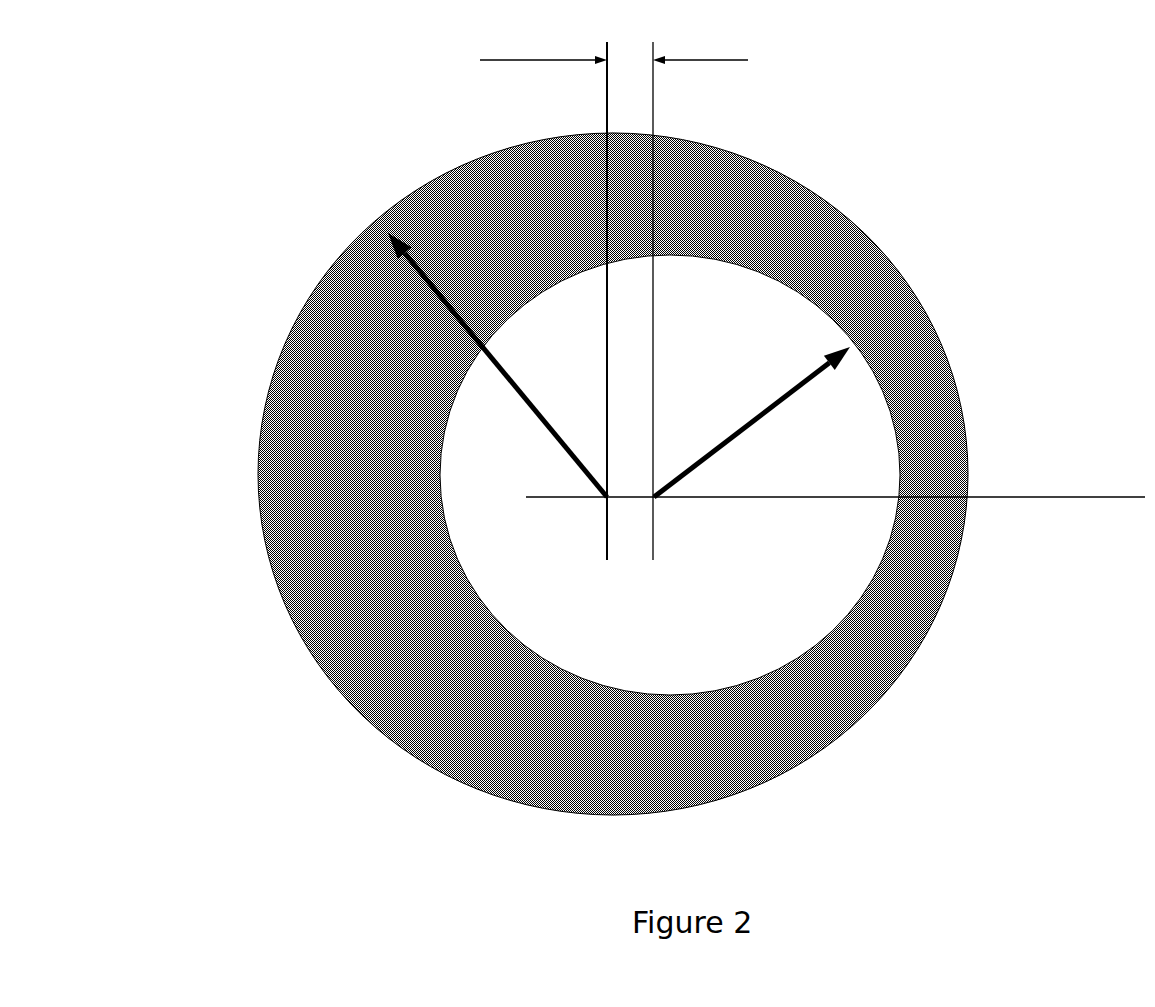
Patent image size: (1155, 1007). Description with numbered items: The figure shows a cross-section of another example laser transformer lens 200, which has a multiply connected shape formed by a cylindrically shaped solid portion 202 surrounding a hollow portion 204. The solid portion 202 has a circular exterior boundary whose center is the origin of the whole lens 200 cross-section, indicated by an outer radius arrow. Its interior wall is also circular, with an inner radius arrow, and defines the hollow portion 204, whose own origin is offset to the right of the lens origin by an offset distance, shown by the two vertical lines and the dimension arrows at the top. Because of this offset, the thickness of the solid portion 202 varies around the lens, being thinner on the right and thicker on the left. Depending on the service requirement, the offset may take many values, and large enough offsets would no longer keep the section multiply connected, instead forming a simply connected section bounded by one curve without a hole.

The laser transformer lens 200 is at (671, 428).
The solid portion 202 is at (920, 408).
The hollow portion 204 is at (490, 568).